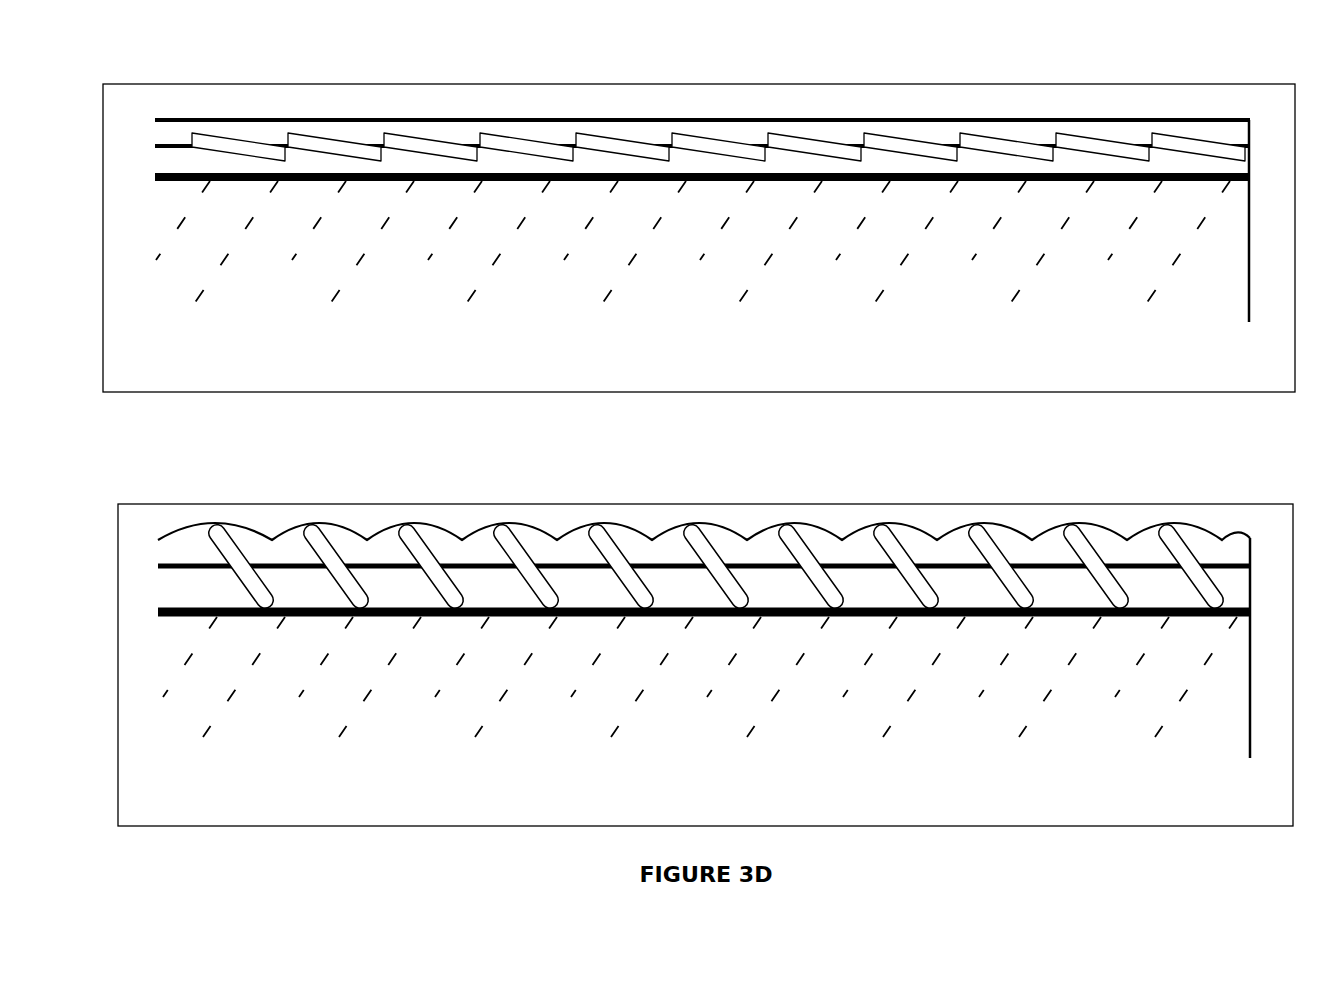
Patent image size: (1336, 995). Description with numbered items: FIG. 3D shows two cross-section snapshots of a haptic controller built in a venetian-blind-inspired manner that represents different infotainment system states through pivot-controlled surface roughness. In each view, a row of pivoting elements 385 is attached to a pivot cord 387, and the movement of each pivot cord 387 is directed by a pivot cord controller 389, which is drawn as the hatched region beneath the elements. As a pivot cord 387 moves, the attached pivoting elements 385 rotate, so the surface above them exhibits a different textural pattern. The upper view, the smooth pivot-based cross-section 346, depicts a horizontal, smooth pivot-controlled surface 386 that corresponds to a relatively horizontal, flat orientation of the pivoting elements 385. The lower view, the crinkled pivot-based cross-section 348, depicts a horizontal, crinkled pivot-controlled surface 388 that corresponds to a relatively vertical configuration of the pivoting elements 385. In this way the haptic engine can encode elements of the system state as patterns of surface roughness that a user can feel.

The smooth pivot-based cross-section 346 is at (699, 209).
The smooth pivot-controlled surface 386 is at (627, 119).
The crinkled pivot-based cross-section 348 is at (705, 623).
The crinkled pivot-controlled surface 388 is at (505, 524).
The pivoting element 385 is at (913, 551).
The pivot cord 387 is at (1033, 561).
The pivot cord controller 389 is at (921, 692).